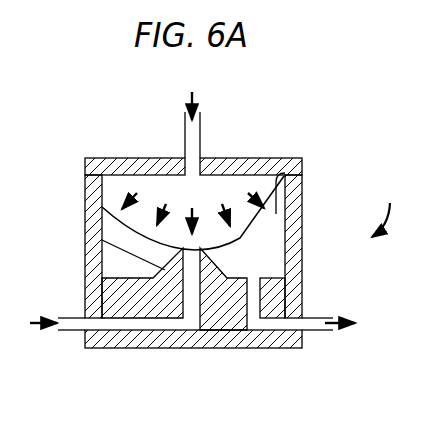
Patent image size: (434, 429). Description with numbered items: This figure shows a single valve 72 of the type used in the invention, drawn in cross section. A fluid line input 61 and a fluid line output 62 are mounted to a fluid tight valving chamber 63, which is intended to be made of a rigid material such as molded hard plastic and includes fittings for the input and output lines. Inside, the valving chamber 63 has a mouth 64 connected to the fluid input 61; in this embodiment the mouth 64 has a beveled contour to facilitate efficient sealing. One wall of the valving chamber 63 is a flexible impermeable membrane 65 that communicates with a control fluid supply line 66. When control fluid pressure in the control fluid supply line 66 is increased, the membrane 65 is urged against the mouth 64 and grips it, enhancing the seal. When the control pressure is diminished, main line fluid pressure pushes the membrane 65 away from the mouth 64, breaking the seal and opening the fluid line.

The fluid line input 61 is at (73, 331).
The fluid line output 62 is at (310, 331).
The valving chamber 63 is at (272, 238).
The mouth 64 is at (102, 238).
The flexible impermeable membrane 65 is at (282, 177).
The control fluid supply line 66 is at (201, 128).
The valve 72 is at (386, 207).